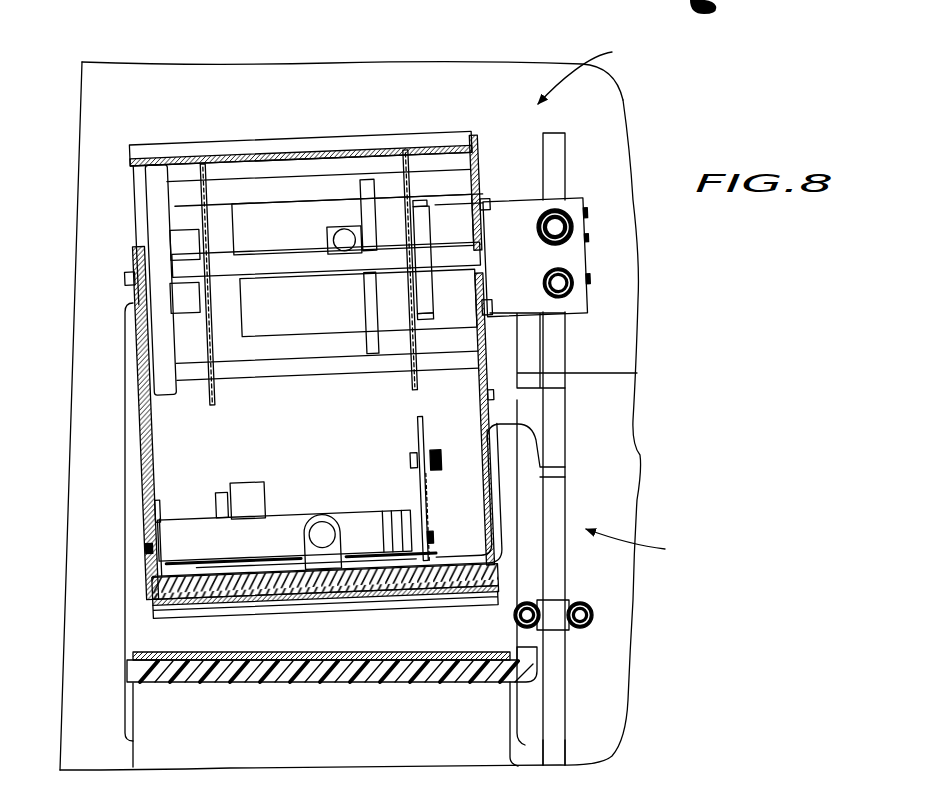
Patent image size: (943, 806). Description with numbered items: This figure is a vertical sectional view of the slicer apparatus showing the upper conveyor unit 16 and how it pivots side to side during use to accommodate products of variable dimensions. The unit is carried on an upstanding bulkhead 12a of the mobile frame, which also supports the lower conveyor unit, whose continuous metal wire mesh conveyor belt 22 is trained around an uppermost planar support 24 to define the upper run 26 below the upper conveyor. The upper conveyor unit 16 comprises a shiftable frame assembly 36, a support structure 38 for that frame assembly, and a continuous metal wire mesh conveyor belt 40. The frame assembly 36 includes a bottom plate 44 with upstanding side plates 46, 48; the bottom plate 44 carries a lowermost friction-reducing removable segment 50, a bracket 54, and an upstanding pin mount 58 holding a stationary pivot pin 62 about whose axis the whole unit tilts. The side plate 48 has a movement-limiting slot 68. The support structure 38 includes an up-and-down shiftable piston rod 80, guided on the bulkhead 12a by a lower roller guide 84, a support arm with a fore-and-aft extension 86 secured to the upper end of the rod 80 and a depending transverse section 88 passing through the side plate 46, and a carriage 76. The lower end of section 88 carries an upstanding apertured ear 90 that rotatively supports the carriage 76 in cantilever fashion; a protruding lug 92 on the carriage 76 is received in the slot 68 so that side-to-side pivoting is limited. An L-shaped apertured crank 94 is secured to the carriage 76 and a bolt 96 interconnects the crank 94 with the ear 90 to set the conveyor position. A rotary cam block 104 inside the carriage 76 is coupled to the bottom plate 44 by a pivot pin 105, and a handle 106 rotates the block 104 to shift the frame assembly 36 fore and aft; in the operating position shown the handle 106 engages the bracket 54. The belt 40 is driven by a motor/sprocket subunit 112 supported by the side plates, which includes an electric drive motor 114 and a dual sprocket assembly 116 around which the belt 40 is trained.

The upstanding bulkhead 12a is at (130, 88).
The upper conveyor unit 16 is at (590, 70).
The conveyor belt 22 is at (473, 655).
The uppermost planar support 24 is at (423, 668).
The upper run 26 is at (152, 646).
The shiftable frame assembly 36 is at (130, 332).
The support structure 38 is at (641, 547).
The conveyor belt 40 is at (281, 150).
The bottom plate 44 is at (473, 558).
The side plate 46 is at (483, 357).
The side plate 48 is at (143, 434).
The friction-reducing removable segment 50 is at (412, 587).
The bracket 54 is at (223, 496).
The pin mount 58 is at (327, 518).
The pivot pin 62 is at (317, 532).
The movement-limiting slot 68 is at (147, 556).
The carriage 76 is at (190, 518).
The piston rod 80 is at (553, 727).
The lower roller guide 84 is at (593, 622).
The fore-and-aft extension 86 is at (553, 468).
The depending transverse section 88 is at (480, 392).
The apertured ear 90 is at (432, 484).
The lug 92 is at (150, 530).
The crank 94 is at (418, 423).
The bolt 96 is at (409, 459).
The rotary cam block 104 is at (217, 562).
The pivot pin 105 is at (253, 565).
The handle 106 is at (250, 490).
The motor/sprocket subunit 112 is at (487, 157).
The electric drive motor 114 is at (575, 259).
The dual sprocket assembly 116 is at (318, 198).